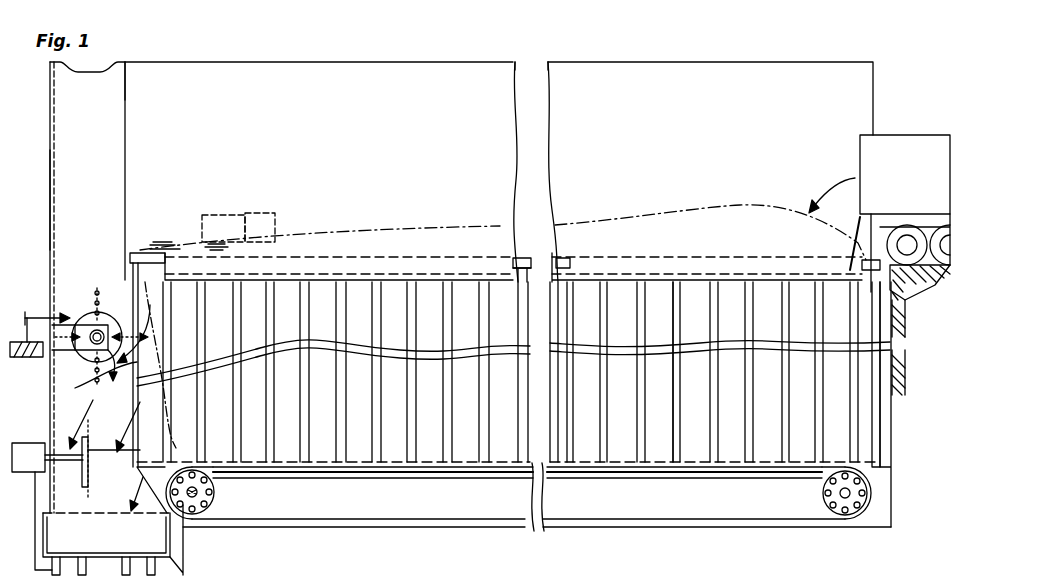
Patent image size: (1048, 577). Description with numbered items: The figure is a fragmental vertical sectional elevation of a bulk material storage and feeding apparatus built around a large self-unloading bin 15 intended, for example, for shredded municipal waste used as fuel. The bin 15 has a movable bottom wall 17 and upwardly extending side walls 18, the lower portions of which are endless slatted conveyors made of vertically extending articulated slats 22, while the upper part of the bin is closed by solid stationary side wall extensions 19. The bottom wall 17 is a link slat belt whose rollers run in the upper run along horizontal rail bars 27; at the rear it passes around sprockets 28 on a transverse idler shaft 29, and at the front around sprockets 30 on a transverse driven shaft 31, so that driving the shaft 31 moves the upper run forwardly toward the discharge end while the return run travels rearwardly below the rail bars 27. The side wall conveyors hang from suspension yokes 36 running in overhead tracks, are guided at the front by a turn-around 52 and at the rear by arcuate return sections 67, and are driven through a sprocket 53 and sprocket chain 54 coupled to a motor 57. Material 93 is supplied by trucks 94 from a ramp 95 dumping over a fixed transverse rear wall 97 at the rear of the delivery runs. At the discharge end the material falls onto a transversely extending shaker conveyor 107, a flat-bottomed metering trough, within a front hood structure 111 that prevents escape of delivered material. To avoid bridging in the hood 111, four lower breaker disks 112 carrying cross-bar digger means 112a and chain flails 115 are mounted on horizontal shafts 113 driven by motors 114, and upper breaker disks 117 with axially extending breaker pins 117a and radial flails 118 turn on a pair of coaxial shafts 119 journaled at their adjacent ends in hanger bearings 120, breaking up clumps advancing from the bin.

The bin 15 is at (143, 195).
The bottom wall 17 is at (686, 468).
The side walls 18 is at (393, 452).
The side wall extensions 19 is at (549, 64).
The slats 22 is at (630, 292).
The rail bars 27 is at (527, 478).
The sprockets 28 is at (823, 498).
The idler shaft 29 is at (848, 493).
The sprockets 30 is at (213, 491).
The driven shaft 31 is at (194, 497).
The suspension yokes 36 is at (904, 282).
The front end turn-around 52 is at (150, 249).
The sprocket 53 is at (153, 246).
The sprocket chain 54 is at (192, 237).
The motor 57 is at (266, 213).
The arcuate rear return sections 67 is at (862, 262).
The material 93 is at (737, 205).
The trucks 94 is at (903, 143).
The ramp 95 is at (928, 240).
The rear wall 97 is at (860, 402).
The shaker conveyor 107 is at (173, 555).
The hood structure 111 is at (58, 198).
The breaker disks 112 is at (90, 458).
The digger means 112a is at (149, 396).
The horizontal shafts 113 is at (47, 447).
The driving motors 114 is at (26, 471).
The chain flails 115 is at (92, 424).
The breaker disks 117 is at (80, 353).
The breaker pins 117a is at (70, 312).
The flails 118 is at (75, 386).
The coaxial shafts 119 is at (97, 290).
The hanger bearings 120 is at (97, 323).